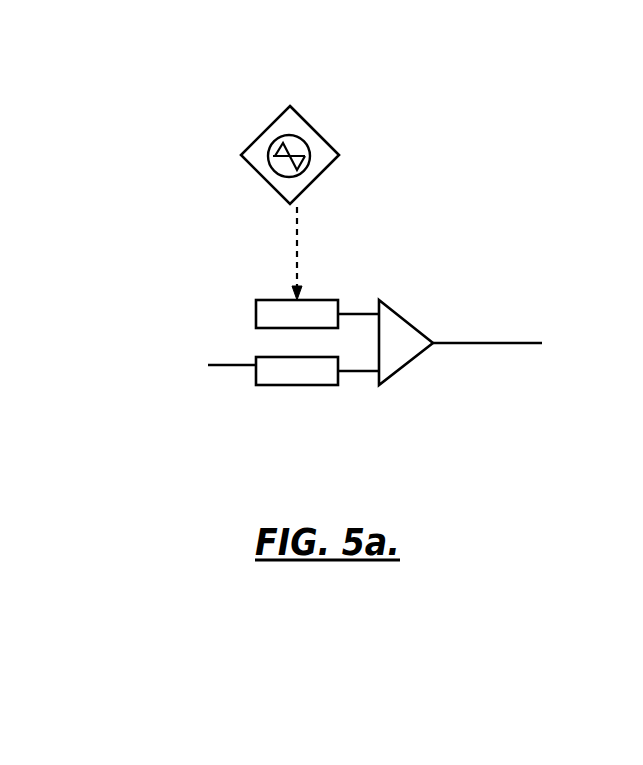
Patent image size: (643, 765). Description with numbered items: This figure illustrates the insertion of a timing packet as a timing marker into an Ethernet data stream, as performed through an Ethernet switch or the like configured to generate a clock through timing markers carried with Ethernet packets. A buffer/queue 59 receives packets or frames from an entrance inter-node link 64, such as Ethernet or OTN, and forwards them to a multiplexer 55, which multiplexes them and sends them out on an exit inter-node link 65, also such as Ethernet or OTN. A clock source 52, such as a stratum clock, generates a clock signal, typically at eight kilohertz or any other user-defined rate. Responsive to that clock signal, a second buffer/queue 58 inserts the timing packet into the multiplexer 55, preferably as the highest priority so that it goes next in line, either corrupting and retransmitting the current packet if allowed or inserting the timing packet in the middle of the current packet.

The clock source 52 is at (297, 107).
The multiplexer 55 is at (393, 305).
The buffer/queue 58 is at (268, 300).
The buffer/queue 59 is at (270, 386).
The entrance inter-node link 64 is at (238, 365).
The exit inter-node link 65 is at (465, 343).